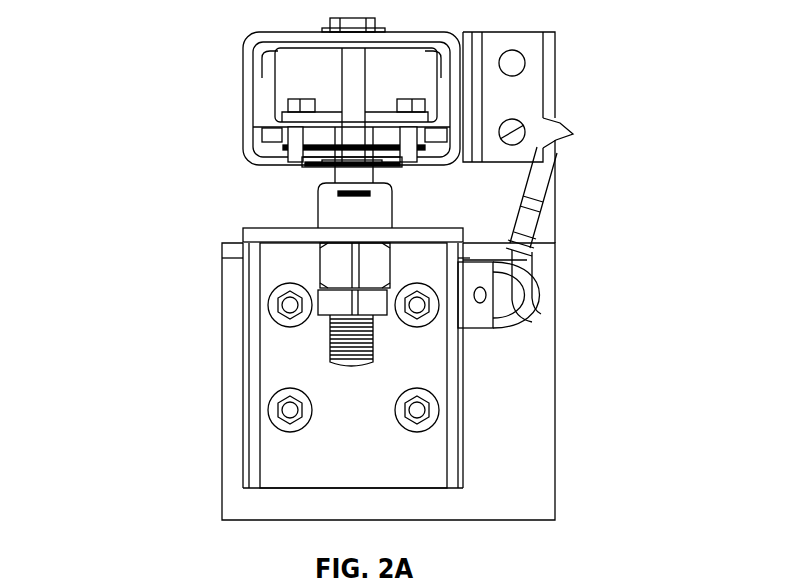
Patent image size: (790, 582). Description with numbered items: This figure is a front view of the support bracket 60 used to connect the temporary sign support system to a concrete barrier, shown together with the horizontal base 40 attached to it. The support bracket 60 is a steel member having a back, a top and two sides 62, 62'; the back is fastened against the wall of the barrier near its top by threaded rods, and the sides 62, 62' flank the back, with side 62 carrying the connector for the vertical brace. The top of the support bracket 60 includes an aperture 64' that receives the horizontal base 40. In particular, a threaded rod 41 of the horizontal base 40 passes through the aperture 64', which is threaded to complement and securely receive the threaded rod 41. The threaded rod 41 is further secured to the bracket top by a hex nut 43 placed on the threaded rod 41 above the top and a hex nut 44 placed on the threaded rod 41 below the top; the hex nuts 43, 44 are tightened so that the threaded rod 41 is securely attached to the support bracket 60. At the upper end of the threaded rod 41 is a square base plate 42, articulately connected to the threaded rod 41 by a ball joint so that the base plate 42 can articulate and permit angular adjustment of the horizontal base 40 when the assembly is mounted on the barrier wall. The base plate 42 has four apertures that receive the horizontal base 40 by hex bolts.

The horizontal base 40 is at (243, 92).
The base plate 42 is at (320, 177).
The hex nut 43 is at (393, 213).
The hex nut 44 is at (332, 278).
The aperture 64' is at (349, 219).
The support bracket 60 is at (183, 301).
The side 62' is at (156, 365).
The threaded rod 41 is at (330, 345).
The side 62 is at (552, 365).